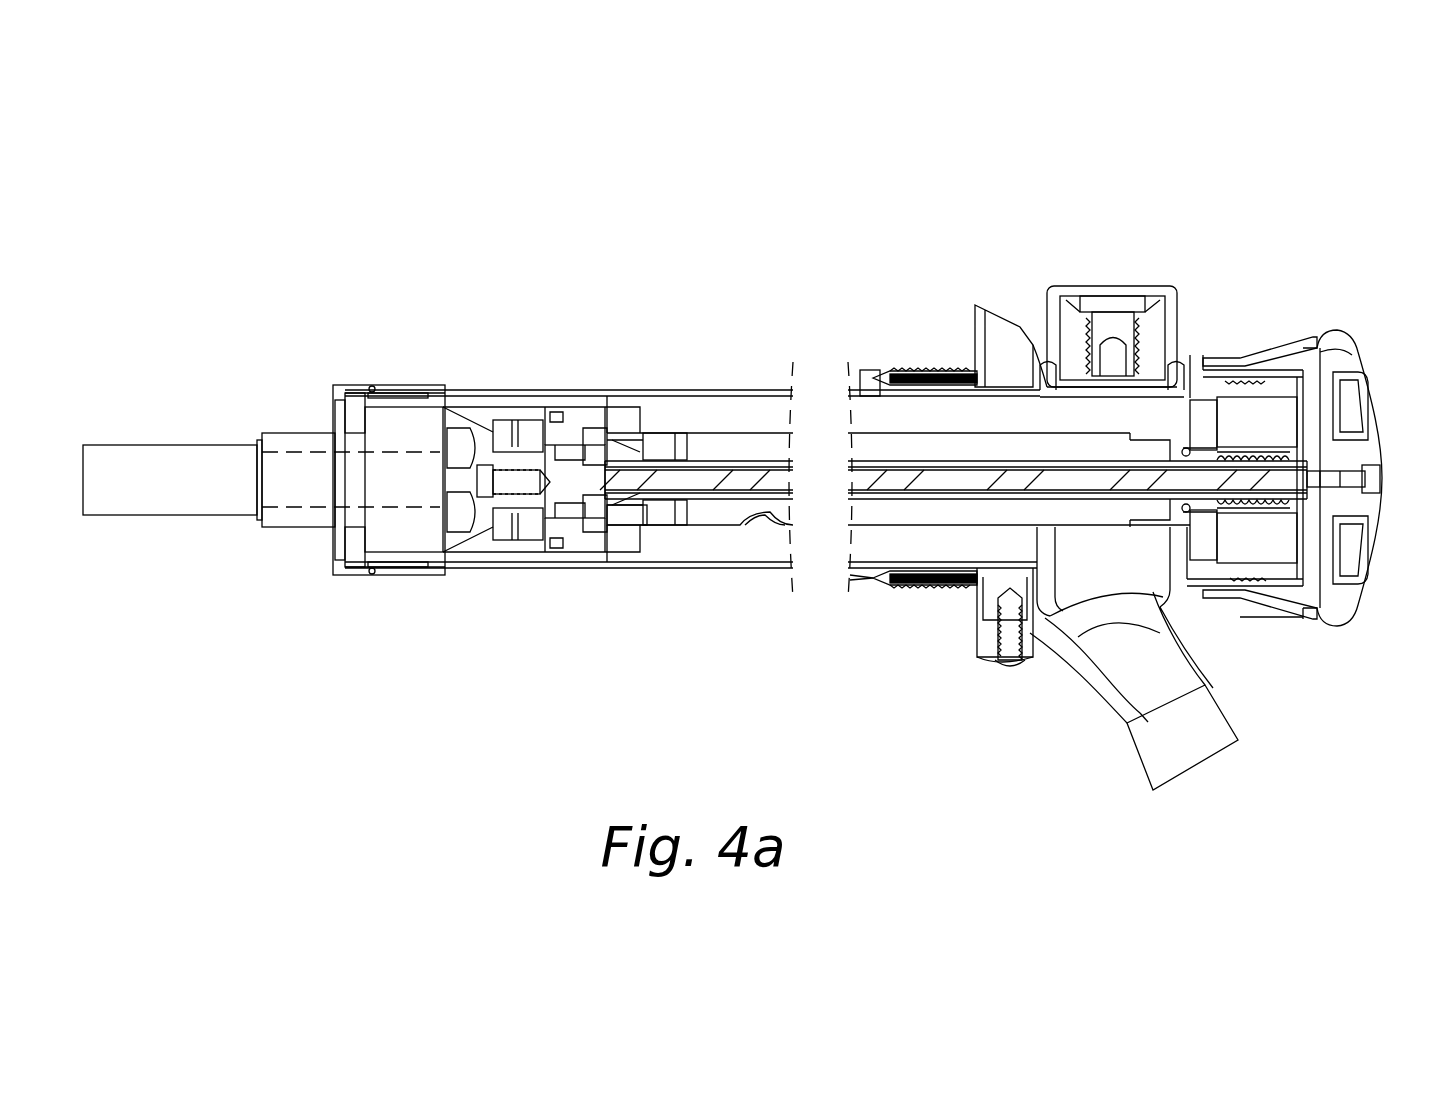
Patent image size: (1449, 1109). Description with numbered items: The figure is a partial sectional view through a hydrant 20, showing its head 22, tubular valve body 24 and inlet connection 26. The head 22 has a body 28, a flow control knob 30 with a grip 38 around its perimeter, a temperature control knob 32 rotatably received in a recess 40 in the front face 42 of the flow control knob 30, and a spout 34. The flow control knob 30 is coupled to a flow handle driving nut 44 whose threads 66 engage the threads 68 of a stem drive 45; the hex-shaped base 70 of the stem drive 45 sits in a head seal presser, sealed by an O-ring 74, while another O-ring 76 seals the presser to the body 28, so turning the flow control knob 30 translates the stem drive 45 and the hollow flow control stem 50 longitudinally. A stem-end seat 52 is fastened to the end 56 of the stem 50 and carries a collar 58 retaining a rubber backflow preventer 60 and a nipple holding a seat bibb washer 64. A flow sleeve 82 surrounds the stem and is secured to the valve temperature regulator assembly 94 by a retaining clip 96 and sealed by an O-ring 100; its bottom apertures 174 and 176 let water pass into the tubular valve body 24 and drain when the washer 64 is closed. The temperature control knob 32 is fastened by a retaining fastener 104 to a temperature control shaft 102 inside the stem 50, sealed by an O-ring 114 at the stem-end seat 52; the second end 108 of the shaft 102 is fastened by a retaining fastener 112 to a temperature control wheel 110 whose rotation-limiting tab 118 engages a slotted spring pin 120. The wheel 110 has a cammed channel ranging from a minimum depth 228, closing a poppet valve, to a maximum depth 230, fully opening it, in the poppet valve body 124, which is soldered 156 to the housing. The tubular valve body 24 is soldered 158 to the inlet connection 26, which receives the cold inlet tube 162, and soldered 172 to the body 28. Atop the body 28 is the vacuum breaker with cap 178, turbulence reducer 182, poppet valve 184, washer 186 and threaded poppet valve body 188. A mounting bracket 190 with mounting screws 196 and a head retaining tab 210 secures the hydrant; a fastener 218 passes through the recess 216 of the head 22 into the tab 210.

The hydrant 20 is at (422, 185).
The head 22 is at (1268, 228).
The tubular valve body 24 is at (710, 392).
The inlet connection 26 is at (362, 393).
The body 28 is at (997, 342).
The flow control knob 30 is at (1342, 340).
The temperature control knob 32 is at (1367, 395).
The spout 34 is at (1177, 740).
The grip 38 is at (1293, 343).
The recess 40 is at (1355, 432).
The front face 42 is at (1357, 357).
The flow handle driving nut 44 is at (1338, 612).
The stem drive 45 is at (1240, 578).
The hollow flow control stem 50 is at (723, 505).
The stem-end seat 52 is at (600, 560).
The end 56 is at (603, 440).
The collar 58 is at (622, 450).
The rubber backflow preventer 60 is at (677, 520).
The seat bibb washer 64 is at (568, 430).
The threads 66 is at (1257, 578).
The threads 68 is at (1212, 395).
The hex-shaped base 70 is at (1168, 630).
The O-ring 74 is at (1198, 355).
The O-ring 76 is at (1203, 385).
The flow sleeve 82 is at (727, 435).
The valve temperature regulator assembly 94 is at (502, 440).
The retaining clip 96 is at (585, 563).
The O-ring 100 is at (560, 553).
The temperature control shaft 102 is at (743, 475).
The temperature control knob retaining fastener 104 is at (1386, 478).
The second end 108 is at (495, 497).
The temperature control wheel 110 is at (505, 500).
The temperature control shaft retaining fastener 112 is at (485, 478).
The O-ring 114 is at (578, 430).
The rotation-limiting tab 118 is at (536, 415).
The slotted spring pin 120 is at (535, 552).
The poppet valve body 124 is at (352, 440).
The solder 156 is at (352, 438).
The solder 158 is at (378, 386).
The cold inlet tube 162 is at (230, 447).
The solder 172 is at (900, 585).
The aperture 174 is at (762, 522).
The aperture 176 is at (1100, 670).
The vacuum breaker cap 178 is at (1057, 350).
The turbulence reducer 182 is at (1127, 323).
The vacuum breaker poppet valve 184 is at (1112, 323).
The vacuum breaker washer 186 is at (1097, 317).
The threaded vacuum breaker poppet valve body 188 is at (1077, 317).
The mounting bracket 190 is at (960, 375).
The mounting screw 196 is at (880, 372).
The head retaining tab 210 is at (995, 658).
The recess 216 is at (978, 335).
The fastener 218 is at (1013, 667).
The minimum depth 228 is at (478, 486).
The maximum depth 230 is at (485, 420).